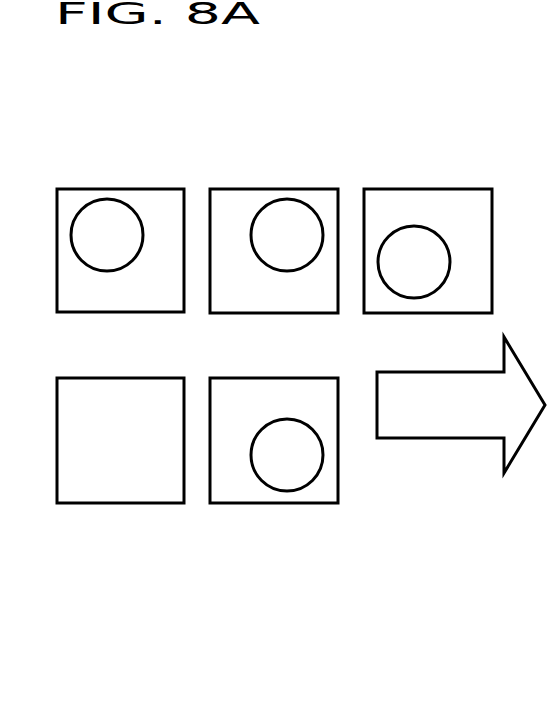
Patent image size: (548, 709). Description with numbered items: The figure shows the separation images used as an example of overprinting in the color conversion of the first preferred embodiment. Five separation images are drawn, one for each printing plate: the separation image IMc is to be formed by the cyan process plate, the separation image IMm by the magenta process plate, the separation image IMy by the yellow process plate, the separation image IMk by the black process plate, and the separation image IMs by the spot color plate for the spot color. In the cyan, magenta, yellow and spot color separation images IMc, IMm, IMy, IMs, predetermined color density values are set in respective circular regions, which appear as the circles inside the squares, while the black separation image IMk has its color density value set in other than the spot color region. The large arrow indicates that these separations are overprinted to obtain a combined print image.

The separation image for cyan IMc is at (72, 188).
The separation image for magenta IMm is at (225, 188).
The separation image for yellow IMy is at (378, 188).
The separation image for black IMk is at (122, 504).
The separation image for spot color IMs is at (275, 504).